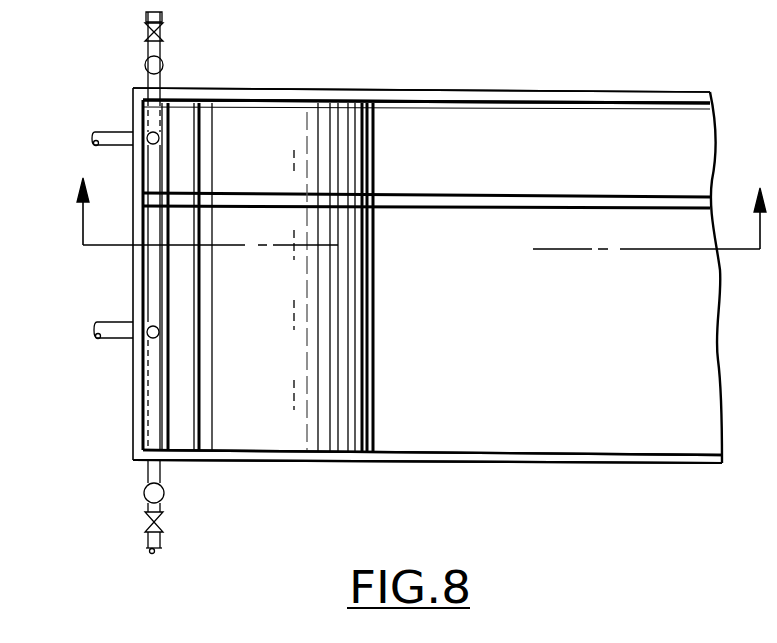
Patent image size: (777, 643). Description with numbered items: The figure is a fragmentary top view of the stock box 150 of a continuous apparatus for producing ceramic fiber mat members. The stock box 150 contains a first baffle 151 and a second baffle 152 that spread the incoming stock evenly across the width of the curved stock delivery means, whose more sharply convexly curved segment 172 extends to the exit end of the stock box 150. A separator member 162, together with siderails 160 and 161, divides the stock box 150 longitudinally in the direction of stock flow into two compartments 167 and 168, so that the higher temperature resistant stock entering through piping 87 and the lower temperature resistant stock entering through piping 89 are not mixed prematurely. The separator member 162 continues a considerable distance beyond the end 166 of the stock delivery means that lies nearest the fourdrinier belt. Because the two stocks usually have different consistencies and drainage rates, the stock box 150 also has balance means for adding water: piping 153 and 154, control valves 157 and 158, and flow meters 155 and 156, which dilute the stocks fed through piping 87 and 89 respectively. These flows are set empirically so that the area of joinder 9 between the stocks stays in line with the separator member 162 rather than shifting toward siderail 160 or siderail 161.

The area of joinder 9 is at (421, 202).
The piping 87 is at (93, 135).
The piping 89 is at (107, 338).
The stock box 150 is at (355, 79).
The first baffle 151 is at (167, 300).
The second baffle 152 is at (198, 273).
The piping 153 is at (150, 82).
The piping 154 is at (160, 470).
The flow meter 155 is at (163, 66).
The flow meter 156 is at (157, 493).
The control valve 157 is at (162, 31).
The control valve 158 is at (160, 520).
The siderail 160 is at (548, 89).
The siderail 161 is at (540, 458).
The separator member 162 is at (548, 200).
The end of stock delivery means 166 is at (372, 312).
The compartment 167 is at (257, 113).
The compartment 168 is at (288, 443).
The convexly curved segment 172 is at (282, 385).